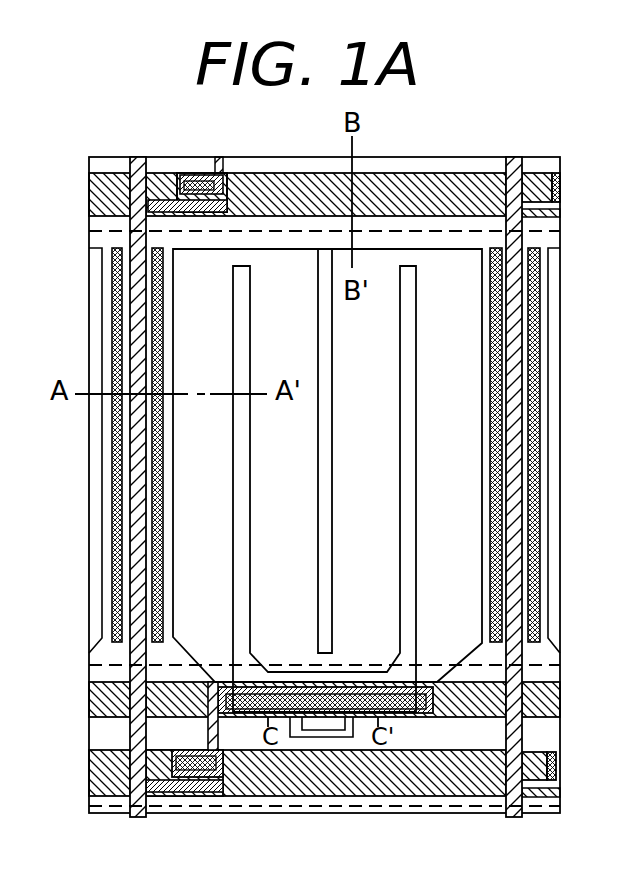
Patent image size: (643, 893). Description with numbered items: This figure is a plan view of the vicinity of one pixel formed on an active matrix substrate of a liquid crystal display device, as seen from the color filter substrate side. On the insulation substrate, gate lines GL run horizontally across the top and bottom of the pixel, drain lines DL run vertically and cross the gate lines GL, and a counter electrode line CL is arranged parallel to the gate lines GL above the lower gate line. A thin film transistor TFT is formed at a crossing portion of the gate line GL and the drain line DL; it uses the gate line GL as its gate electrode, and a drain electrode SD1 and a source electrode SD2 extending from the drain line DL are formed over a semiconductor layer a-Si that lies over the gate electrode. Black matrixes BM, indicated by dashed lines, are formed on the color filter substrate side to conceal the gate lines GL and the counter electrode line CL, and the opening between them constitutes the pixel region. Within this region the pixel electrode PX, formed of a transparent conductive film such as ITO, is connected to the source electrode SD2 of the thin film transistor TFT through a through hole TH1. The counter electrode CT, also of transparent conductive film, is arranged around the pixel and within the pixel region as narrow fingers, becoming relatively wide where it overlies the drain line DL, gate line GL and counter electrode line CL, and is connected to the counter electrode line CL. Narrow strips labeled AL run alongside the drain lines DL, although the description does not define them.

The drain line DL is at (133, 808).
The gate line GL is at (92, 771).
The counter electrode line CL is at (92, 698).
The thin film transistor TFT is at (172, 742).
The drain electrode SD1 is at (163, 786).
The source electrode SD2 is at (215, 740).
The semiconductor layer a-Si is at (222, 778).
The through hole TH1 is at (334, 722).
The black matrix BM is at (528, 668).
The alignment layer AL is at (168, 333).
The counter electrode CT is at (173, 531).
The pixel electrode PX is at (250, 582).